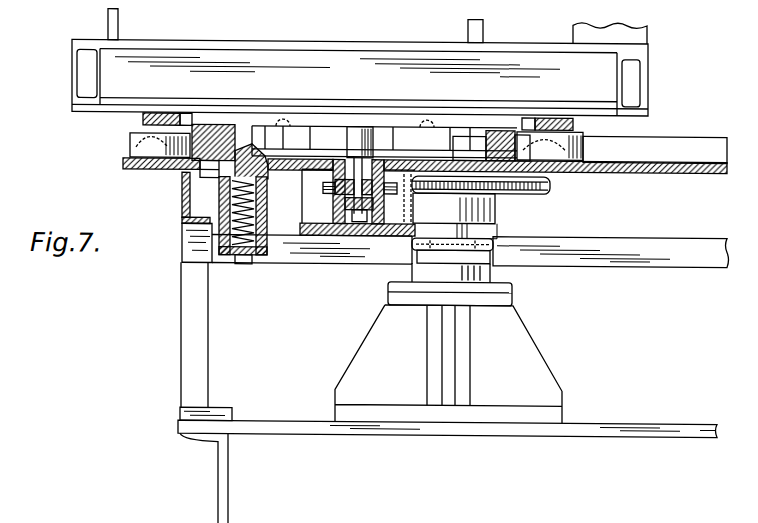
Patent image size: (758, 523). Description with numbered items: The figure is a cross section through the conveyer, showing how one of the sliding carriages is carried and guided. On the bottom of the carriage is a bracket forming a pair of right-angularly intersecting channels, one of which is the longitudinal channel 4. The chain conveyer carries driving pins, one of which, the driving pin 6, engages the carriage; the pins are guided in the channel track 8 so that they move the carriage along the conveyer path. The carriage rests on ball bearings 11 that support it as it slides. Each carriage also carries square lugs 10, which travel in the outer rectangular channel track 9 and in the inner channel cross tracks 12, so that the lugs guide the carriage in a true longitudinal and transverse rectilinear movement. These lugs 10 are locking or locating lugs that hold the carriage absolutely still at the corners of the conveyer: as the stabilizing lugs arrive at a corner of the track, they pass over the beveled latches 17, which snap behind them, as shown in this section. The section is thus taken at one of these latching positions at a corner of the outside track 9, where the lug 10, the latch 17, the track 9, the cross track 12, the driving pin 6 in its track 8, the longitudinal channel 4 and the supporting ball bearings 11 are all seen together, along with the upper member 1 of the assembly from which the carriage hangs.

The guide beam 1 is at (525, 64).
The longitudinal channel 4 is at (384, 121).
The driving pin 6 is at (356, 134).
The channel track 8 is at (140, 125).
The rectangular channel track 9 is at (206, 135).
The lug 10 is at (183, 189).
The ball bearing 11 is at (140, 133).
The inner channel cross track 12 is at (493, 130).
The beveled latch 17 is at (252, 136).